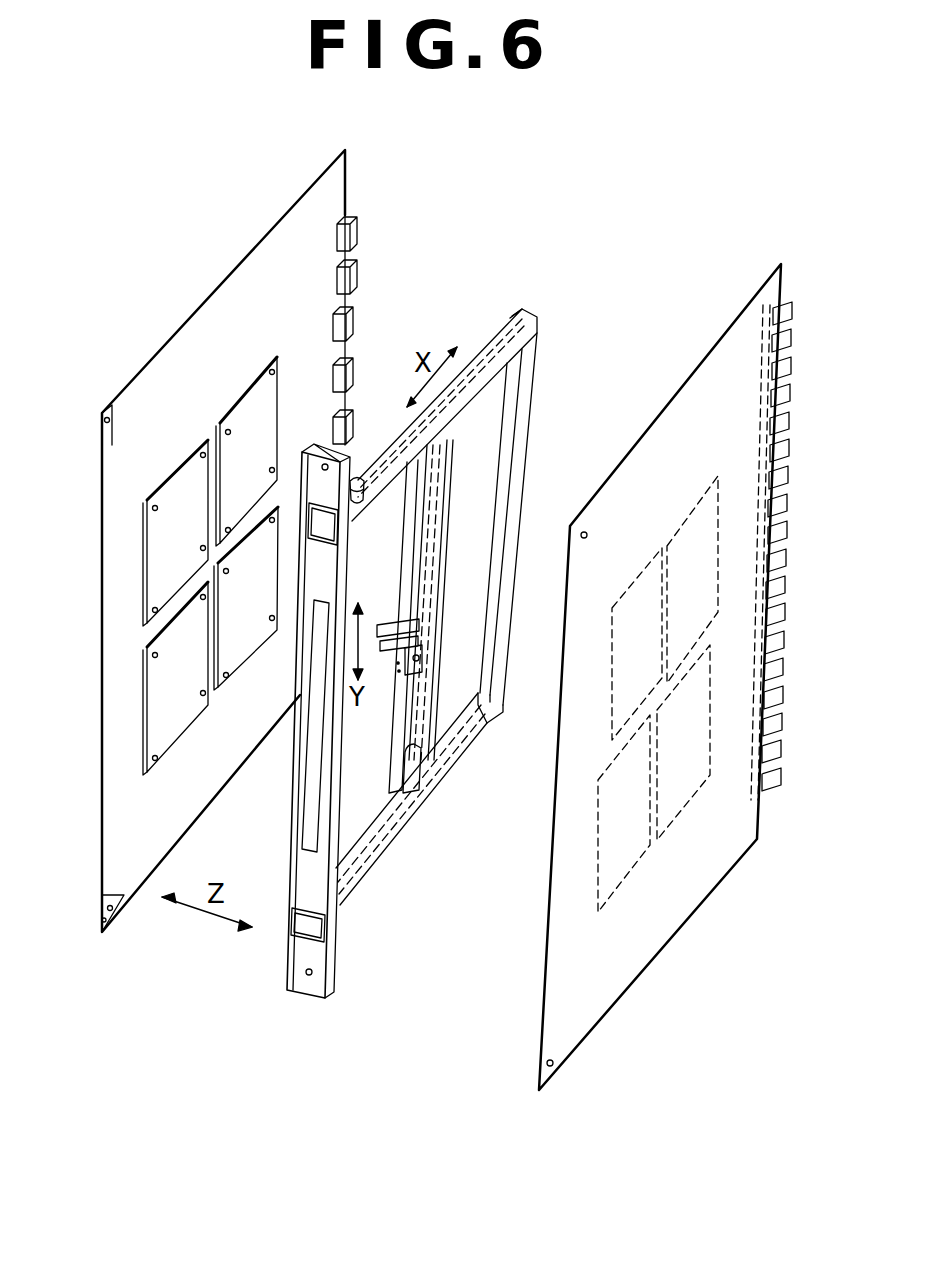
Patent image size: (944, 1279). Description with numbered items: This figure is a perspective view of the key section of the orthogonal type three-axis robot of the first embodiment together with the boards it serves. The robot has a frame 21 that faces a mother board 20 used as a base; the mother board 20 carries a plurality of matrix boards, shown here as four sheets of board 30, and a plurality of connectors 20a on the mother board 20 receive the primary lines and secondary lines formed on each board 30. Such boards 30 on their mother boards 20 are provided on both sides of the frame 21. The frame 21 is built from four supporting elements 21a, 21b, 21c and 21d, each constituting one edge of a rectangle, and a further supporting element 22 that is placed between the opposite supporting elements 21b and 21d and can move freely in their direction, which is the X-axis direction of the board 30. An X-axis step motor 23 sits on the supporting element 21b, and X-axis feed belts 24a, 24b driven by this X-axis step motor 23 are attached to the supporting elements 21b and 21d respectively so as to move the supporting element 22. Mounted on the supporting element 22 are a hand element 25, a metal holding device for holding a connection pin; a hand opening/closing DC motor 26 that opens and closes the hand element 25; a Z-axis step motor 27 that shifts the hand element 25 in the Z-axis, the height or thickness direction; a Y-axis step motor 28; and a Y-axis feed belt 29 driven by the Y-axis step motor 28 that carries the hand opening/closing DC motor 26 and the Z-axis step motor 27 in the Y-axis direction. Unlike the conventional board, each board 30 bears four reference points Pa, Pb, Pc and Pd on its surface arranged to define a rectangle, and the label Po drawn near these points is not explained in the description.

The mother board 20 is at (212, 294).
The connectors 20a is at (362, 263).
The frame 21 is at (465, 595).
The supporting element 21a is at (290, 762).
The supporting element 21b is at (490, 333).
The supporting element 21c is at (524, 494).
The supporting element 21d is at (358, 886).
The supporting element 22 is at (455, 518).
The X-axis step motor 23 is at (358, 472).
The X-axis feed belt 24a is at (508, 302).
The X-axis feed belt 24b is at (477, 730).
The hand element 25 is at (383, 675).
The hand opening/closing DC motor 26 is at (412, 623).
The Z-axis step motor 27 is at (407, 670).
The Y-axis step motor 28 is at (412, 796).
The Y-axis feed belt 29 is at (438, 584).
The board 30 is at (189, 565).
The reference point Pa is at (268, 367).
The reference point Pb is at (215, 418).
The reference point Pc is at (210, 524).
The reference point Pd is at (278, 500).
The board Po is at (272, 450).